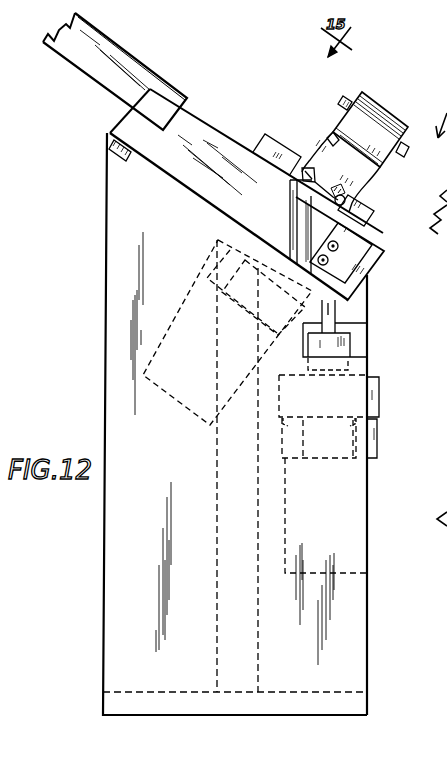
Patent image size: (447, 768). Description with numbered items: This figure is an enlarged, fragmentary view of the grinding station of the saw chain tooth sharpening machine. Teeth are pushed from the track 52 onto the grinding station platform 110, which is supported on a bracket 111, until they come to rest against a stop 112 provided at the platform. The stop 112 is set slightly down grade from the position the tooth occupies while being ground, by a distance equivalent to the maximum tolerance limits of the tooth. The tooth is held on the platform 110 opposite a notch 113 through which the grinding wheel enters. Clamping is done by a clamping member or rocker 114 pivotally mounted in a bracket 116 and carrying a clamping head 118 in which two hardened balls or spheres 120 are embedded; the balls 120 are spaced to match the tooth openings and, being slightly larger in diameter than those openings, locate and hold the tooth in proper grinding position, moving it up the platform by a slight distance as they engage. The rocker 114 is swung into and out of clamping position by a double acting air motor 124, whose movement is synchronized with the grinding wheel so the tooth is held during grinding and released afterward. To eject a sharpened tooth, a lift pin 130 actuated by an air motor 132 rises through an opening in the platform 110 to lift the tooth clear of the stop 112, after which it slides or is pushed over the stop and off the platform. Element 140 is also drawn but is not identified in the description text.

The track 52 is at (124, 40).
The grinding station platform 110 is at (213, 127).
The bracket 111 is at (114, 389).
The stop 112 is at (348, 232).
The notch 113 is at (293, 220).
The clamping member or rocker 114 is at (385, 112).
The bracket 116 is at (378, 178).
The clamping head 118 is at (310, 170).
The hardened balls or spheres 120 is at (311, 181).
The double acting air motor 124 is at (182, 415).
The lift pin 130 is at (330, 315).
The air motor 132 is at (369, 478).
The housing wall 140 is at (349, 657).